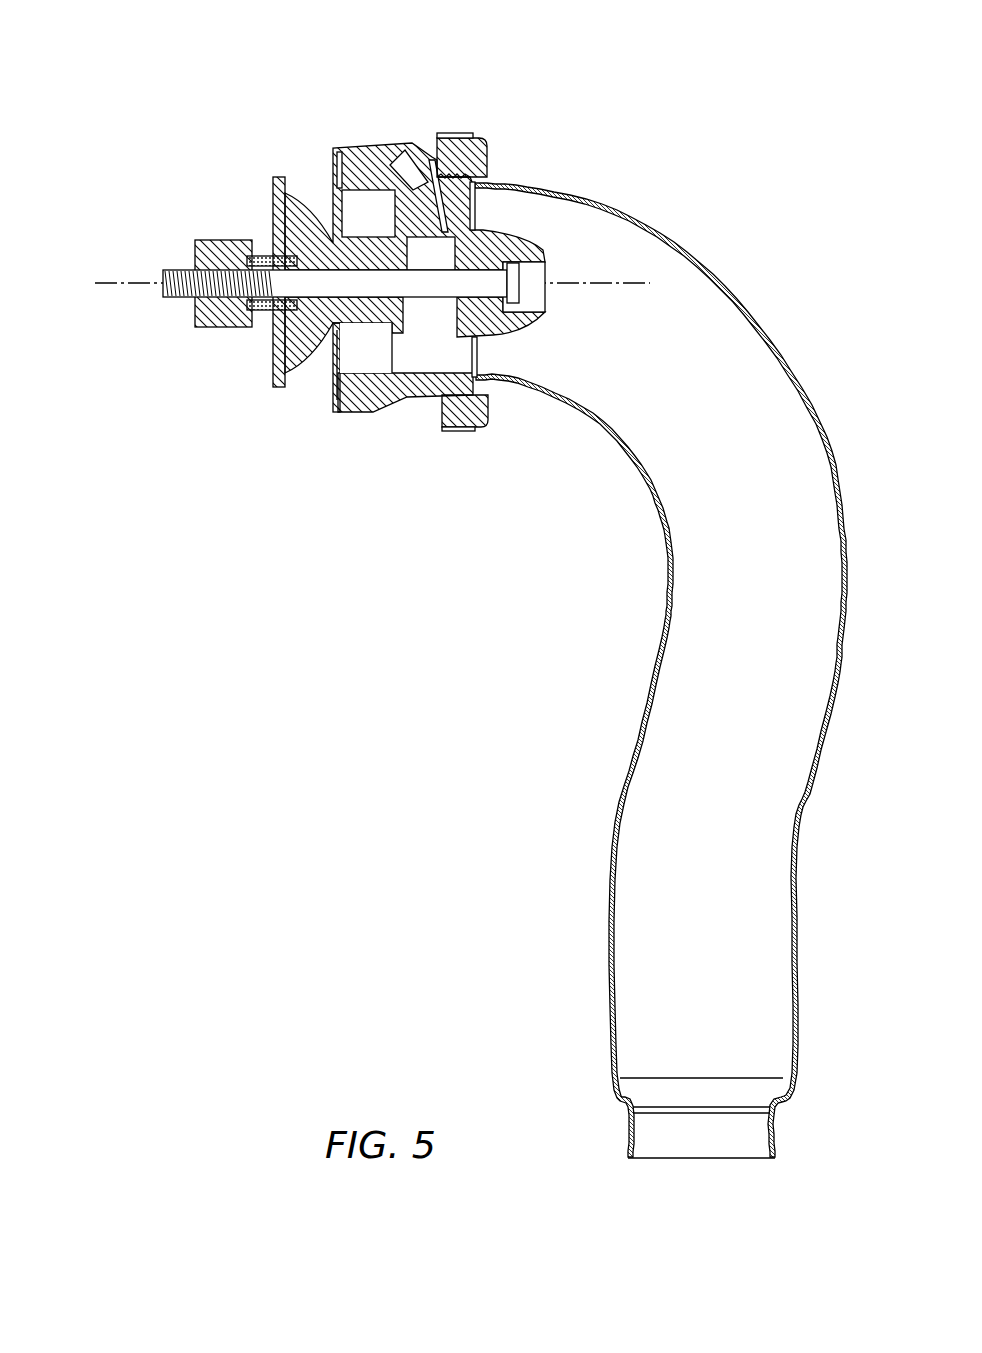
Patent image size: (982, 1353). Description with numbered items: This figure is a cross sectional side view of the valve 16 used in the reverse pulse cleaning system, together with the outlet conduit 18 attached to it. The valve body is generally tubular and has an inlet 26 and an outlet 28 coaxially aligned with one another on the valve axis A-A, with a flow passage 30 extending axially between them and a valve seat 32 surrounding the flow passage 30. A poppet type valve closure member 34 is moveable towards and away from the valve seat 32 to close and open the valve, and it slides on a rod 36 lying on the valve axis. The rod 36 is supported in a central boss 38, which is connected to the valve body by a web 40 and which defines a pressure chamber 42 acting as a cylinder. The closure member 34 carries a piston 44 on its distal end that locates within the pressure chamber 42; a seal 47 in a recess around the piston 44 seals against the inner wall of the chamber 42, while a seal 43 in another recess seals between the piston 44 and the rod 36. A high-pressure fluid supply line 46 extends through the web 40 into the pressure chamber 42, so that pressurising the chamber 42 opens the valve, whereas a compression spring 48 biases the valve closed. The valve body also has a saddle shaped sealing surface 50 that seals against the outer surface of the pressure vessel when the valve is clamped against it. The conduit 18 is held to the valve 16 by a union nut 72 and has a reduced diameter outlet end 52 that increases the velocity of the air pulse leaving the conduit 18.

The valve 16 is at (250, 142).
The outlet conduit 18 is at (778, 343).
The inlet 26 is at (345, 210).
The outlet 28 is at (462, 355).
The flow passage 30 is at (413, 357).
The valve seat 32 is at (337, 408).
The poppet type valve closure member 34 is at (270, 207).
The rod 36 is at (270, 340).
The central boss 38 is at (485, 225).
The web 40 is at (457, 202).
The pressure chamber 42 is at (432, 315).
The seal 43 is at (380, 310).
The piston 44 is at (373, 323).
The high-pressure fluid supply line 46 is at (432, 175).
The seal 47 is at (400, 250).
The compression spring 48 is at (263, 315).
The saddle shaped sealing surface 50 is at (330, 158).
The reduced diameter outlet end 52 is at (730, 1150).
The union nut 72 is at (470, 135).